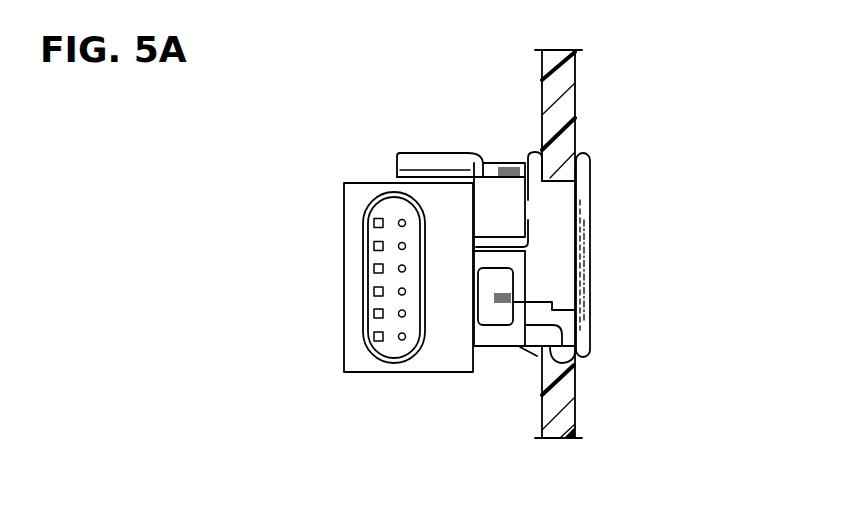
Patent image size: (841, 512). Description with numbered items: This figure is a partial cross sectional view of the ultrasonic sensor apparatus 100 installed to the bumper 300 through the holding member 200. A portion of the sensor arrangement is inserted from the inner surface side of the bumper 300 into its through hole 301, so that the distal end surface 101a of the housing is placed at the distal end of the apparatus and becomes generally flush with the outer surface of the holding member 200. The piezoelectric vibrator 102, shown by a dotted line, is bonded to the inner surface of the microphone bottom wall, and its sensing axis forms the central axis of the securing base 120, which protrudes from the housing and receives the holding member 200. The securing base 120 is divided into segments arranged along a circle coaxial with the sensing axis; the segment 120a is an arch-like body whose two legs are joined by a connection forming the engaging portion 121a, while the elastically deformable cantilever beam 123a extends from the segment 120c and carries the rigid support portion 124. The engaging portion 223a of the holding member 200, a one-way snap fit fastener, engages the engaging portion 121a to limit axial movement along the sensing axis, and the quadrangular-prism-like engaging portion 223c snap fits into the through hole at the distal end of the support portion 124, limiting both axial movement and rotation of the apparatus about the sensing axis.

The ultrasonic sensor apparatus 100 is at (333, 296).
The support portion 124 is at (415, 146).
The cantilever beam 123a is at (412, 176).
The securing base 120 is at (519, 260).
The segment of the securing base 120c is at (491, 197).
The segment of the securing base 120a is at (487, 336).
The engaging portion of the holding member 223c is at (503, 165).
The engaging portion of the holding member 223a is at (493, 298).
The engaging portion of the securing base 121a is at (517, 290).
The bumper 300 is at (604, 244).
The through hole 301 is at (577, 366).
The holding member 200 is at (649, 247).
The distal end surface 101a is at (587, 232).
The piezoelectric vibrator 102 is at (587, 255).